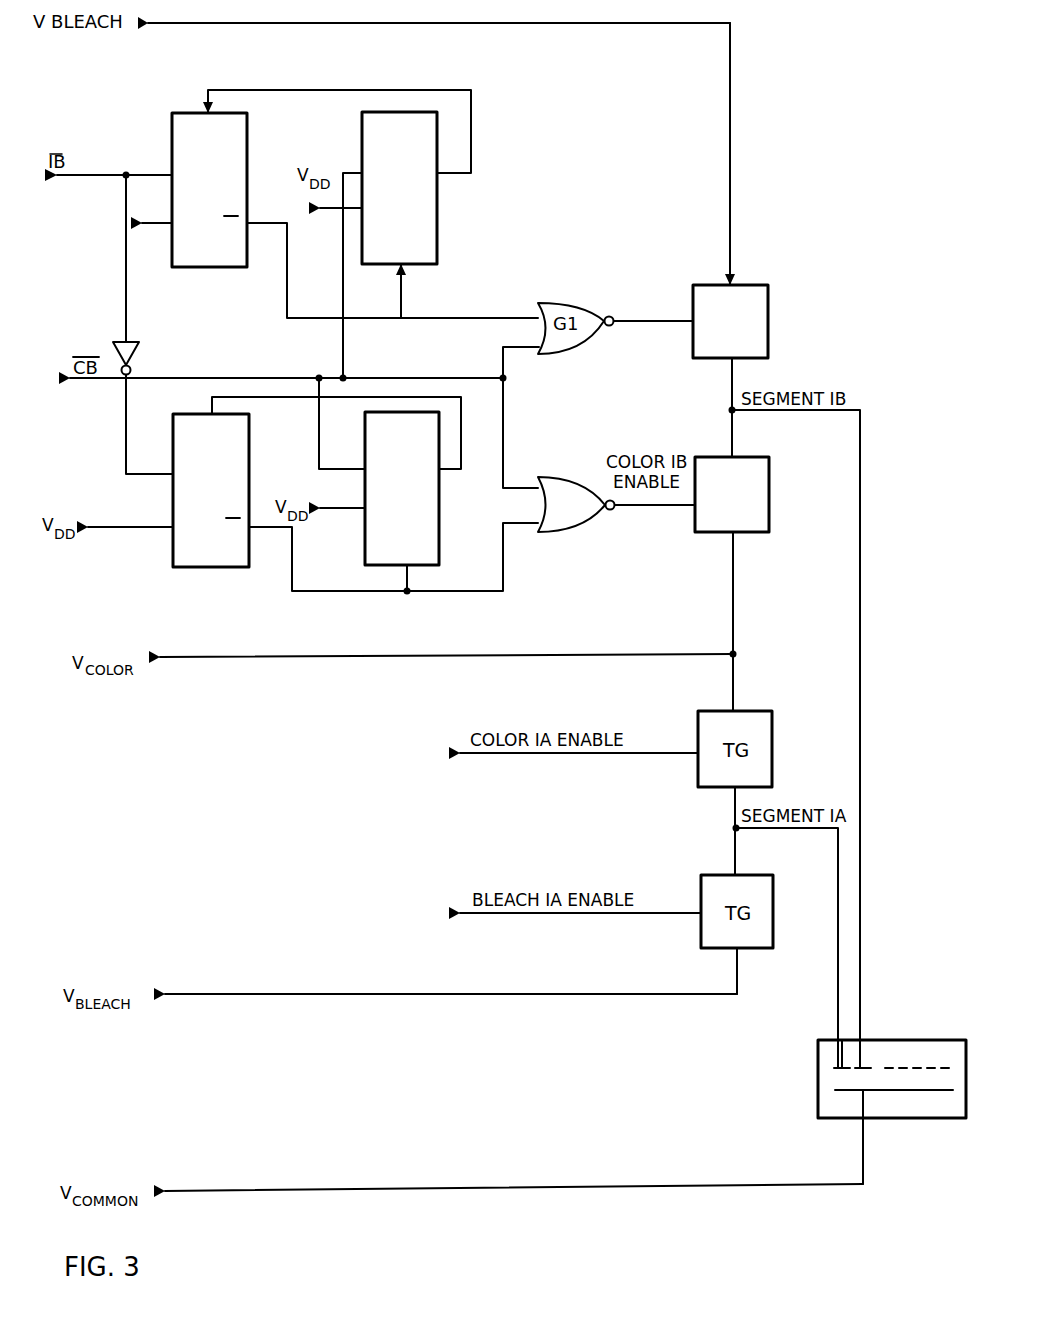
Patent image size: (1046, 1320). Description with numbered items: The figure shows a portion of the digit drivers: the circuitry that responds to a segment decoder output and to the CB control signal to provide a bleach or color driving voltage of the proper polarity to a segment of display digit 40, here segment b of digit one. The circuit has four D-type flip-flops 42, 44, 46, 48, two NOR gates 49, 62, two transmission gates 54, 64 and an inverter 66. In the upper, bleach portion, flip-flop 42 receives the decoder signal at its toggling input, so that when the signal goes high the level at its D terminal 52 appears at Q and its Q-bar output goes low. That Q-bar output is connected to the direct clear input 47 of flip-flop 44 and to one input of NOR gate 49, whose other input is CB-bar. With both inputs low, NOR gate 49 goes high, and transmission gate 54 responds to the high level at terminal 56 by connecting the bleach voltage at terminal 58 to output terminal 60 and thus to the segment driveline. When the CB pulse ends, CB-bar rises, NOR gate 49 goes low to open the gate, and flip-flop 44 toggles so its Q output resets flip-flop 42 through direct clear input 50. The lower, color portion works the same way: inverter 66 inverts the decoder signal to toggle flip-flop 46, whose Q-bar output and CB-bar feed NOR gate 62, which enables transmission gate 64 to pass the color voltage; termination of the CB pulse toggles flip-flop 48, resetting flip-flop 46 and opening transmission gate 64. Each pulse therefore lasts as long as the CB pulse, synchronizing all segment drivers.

The display digit 40 is at (905, 1118).
The flip-flop 42 is at (248, 136).
The flip-flop 44 is at (438, 242).
The flip-flop 46 is at (249, 471).
The direct clear input 47 is at (406, 266).
The flip-flop 48 is at (440, 521).
The NOR gate 49 is at (538, 320).
The direct clear input 50 is at (203, 107).
The D terminal 52 is at (160, 228).
The transmission gate 54 is at (770, 300).
The control terminal 56 is at (685, 322).
The input terminal 58 is at (726, 272).
The output terminal 60 is at (732, 393).
The NOR gate 62 is at (566, 478).
The transmission gate 64 is at (770, 488).
The inverter 66 is at (118, 352).